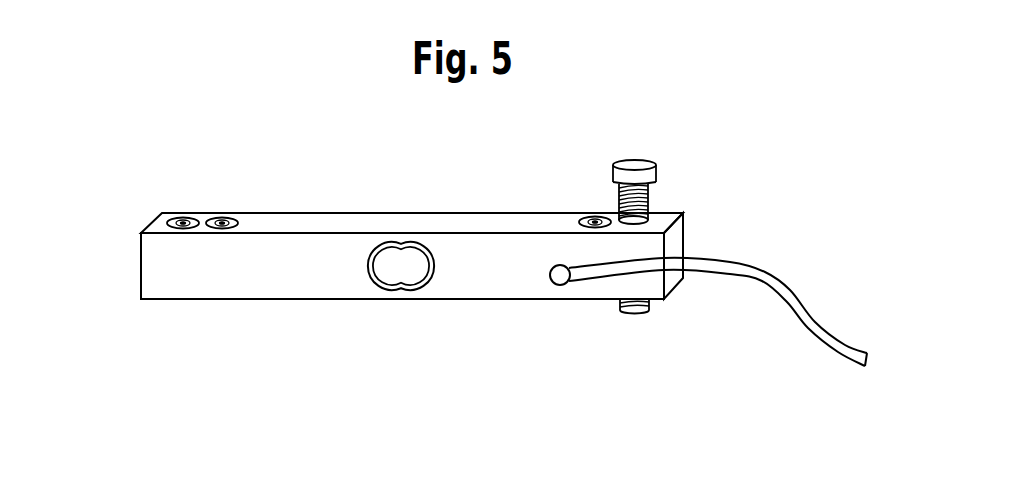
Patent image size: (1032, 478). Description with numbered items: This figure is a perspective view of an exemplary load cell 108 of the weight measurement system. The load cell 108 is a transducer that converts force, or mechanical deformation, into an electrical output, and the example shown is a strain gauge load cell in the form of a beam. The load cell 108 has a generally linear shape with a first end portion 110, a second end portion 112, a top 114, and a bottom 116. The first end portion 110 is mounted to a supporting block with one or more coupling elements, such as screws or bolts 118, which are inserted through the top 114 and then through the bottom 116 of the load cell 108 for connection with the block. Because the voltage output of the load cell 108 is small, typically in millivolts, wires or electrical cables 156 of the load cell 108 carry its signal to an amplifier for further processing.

The load cell 108 is at (160, 198).
The first end portion 110 is at (628, 320).
The second end portion 112 is at (172, 307).
The top 114 is at (411, 205).
The bottom 116 is at (388, 305).
The screws or bolts 118 is at (602, 200).
The wires or electrical cables 156 is at (800, 286).